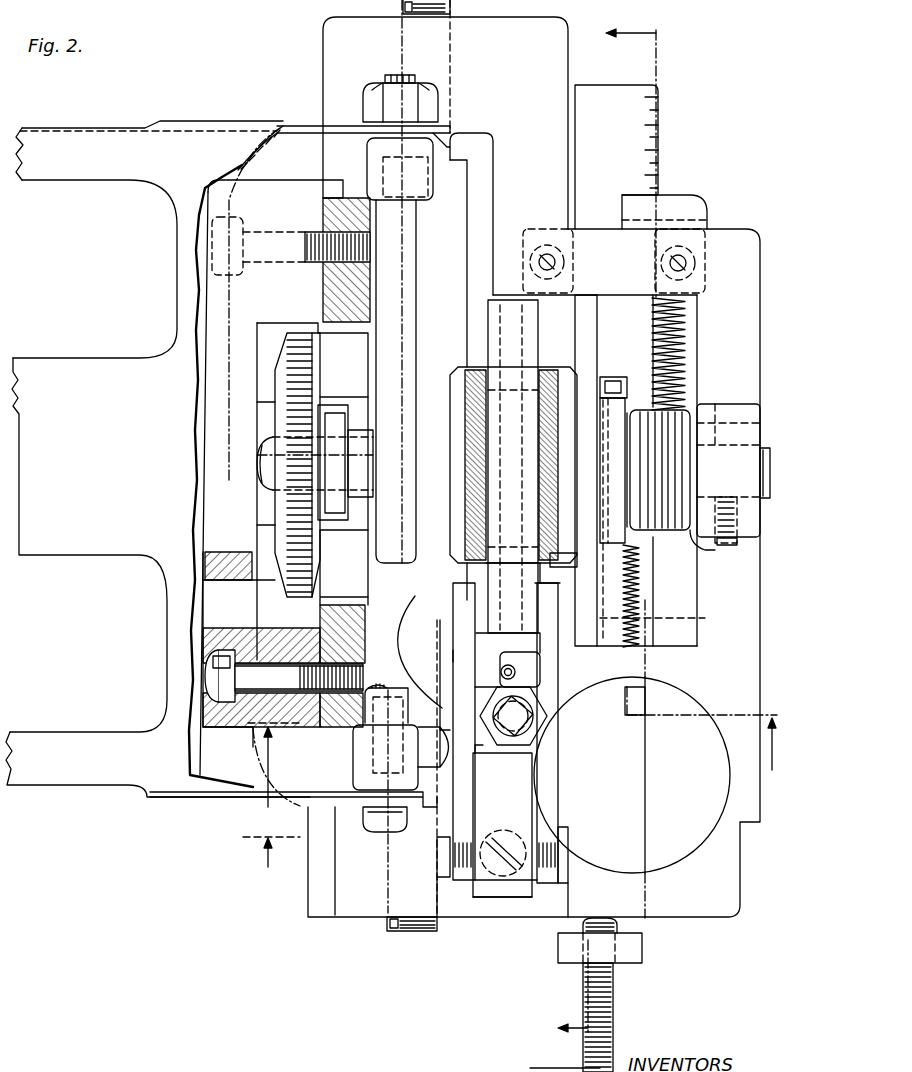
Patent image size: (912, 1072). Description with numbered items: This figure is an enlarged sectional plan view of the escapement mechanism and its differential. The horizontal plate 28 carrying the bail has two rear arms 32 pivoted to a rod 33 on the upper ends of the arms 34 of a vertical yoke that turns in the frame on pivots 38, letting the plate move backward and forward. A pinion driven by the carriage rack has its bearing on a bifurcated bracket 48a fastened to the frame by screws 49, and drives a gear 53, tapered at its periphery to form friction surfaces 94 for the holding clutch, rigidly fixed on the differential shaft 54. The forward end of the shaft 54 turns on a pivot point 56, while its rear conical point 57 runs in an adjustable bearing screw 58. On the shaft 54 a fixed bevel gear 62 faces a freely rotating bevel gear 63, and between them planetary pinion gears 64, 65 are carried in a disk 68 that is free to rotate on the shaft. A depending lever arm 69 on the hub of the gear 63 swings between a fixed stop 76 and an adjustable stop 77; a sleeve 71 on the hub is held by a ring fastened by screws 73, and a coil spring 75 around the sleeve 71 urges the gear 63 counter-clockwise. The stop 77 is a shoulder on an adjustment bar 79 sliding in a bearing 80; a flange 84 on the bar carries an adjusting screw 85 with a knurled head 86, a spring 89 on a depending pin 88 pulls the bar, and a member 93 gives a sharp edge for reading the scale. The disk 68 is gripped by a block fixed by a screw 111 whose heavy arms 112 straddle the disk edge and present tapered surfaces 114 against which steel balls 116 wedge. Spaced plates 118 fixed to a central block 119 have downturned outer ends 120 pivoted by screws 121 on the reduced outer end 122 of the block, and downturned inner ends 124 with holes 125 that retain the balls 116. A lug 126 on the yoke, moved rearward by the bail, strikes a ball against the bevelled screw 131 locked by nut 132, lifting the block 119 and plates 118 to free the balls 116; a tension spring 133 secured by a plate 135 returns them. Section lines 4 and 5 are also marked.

The plate 28 is at (58, 358).
The arms 32 is at (300, 125).
The rod 33 is at (416, 265).
The arms 34 is at (407, 183).
The pivots 38 is at (410, 6).
The bifurcated bracket 48a is at (335, 625).
The screws 49 is at (216, 663).
The gear 53 is at (275, 535).
The shaft 54 is at (362, 480).
The pivot point 56 is at (270, 470).
The conical point 57 is at (708, 484).
The bearing screw 58 is at (722, 425).
The bevel gear 62 is at (460, 556).
The bevel gear 63 is at (565, 495).
The planetary pinion gear 64 is at (470, 368).
The planetary pinion gear 65 is at (460, 580).
The disk 68 is at (548, 324).
The lever arm 69 is at (592, 590).
The sleeve 71 is at (690, 412).
The screws 73 is at (614, 378).
The coil spring 75 is at (700, 552).
The stop 76 is at (690, 620).
The stop 77 is at (560, 396).
The adjustment bar 79 is at (637, 800).
The bearing 80 is at (640, 933).
The flange 84 is at (640, 960).
The adjusting screw 85 is at (618, 1005).
The knurled head 86 is at (545, 1068).
The depending pin 88 is at (675, 680).
The spring 89 is at (690, 318).
The member 93 is at (648, 190).
The surfaces 94 is at (268, 567).
The screw 111 is at (510, 880).
The arms 112 is at (448, 620).
The tapered surfaces 114 is at (453, 600).
The steel balls 116 is at (450, 628).
The plates 118 is at (535, 818).
The block 119 is at (480, 668).
The outer ends 120 is at (450, 882).
The pivot screws 121 is at (445, 866).
The outer end 122 is at (473, 897).
The inner ends 124 is at (545, 585).
The holes 125 is at (453, 656).
The lug 126 is at (398, 688).
The screw 131 is at (560, 734).
The locking nut 132 is at (487, 700).
The tension spring 133 is at (508, 642).
The plate 135 is at (512, 755).
The section line 4- 4 is at (510, 792).
The section line 5- 5 is at (594, 530).